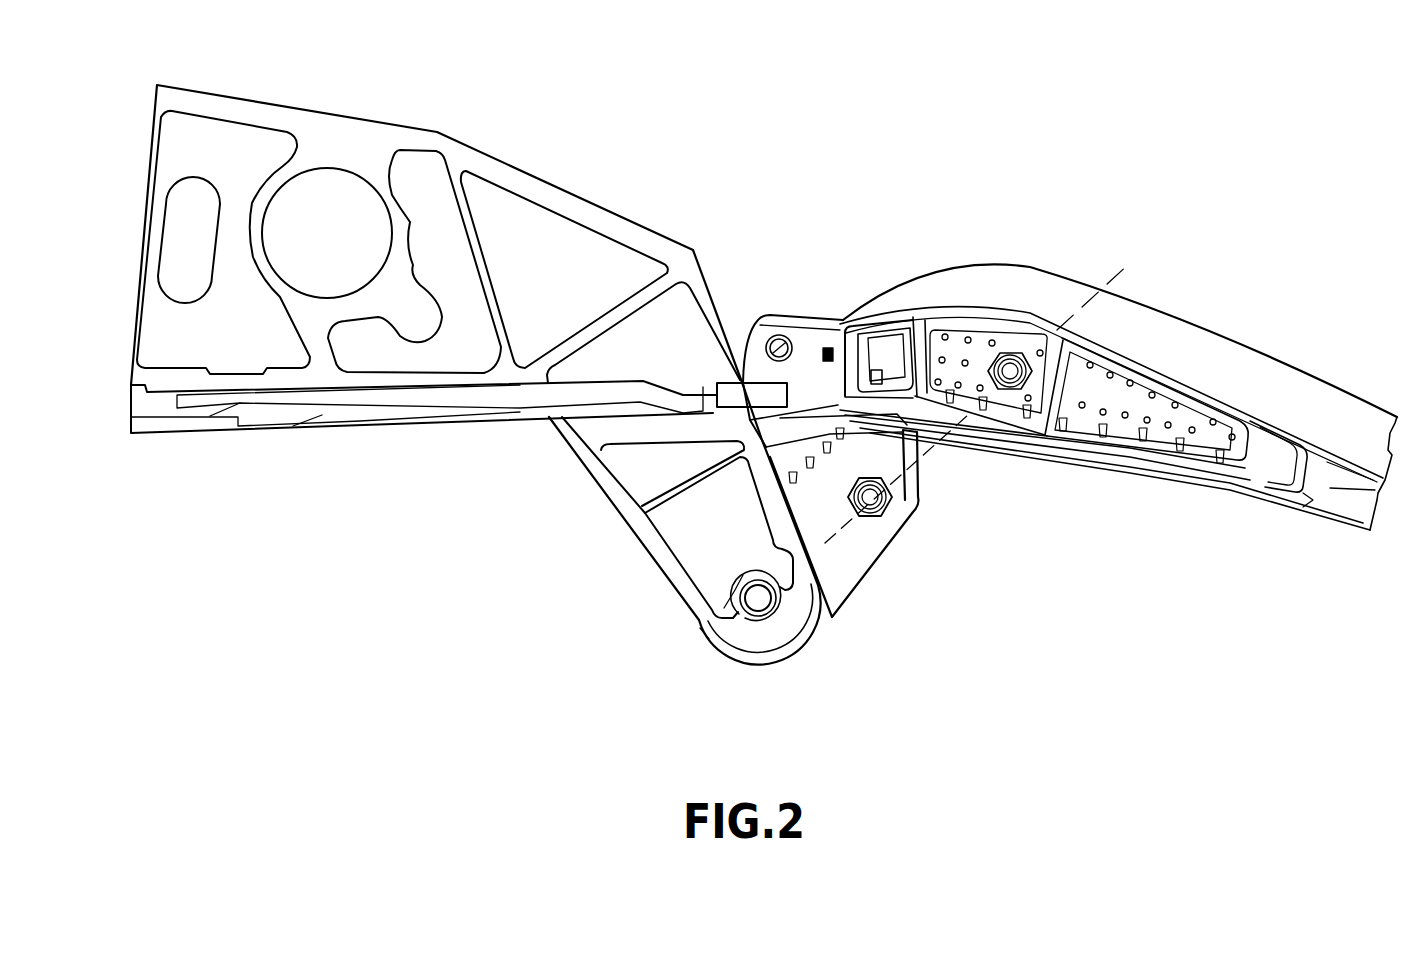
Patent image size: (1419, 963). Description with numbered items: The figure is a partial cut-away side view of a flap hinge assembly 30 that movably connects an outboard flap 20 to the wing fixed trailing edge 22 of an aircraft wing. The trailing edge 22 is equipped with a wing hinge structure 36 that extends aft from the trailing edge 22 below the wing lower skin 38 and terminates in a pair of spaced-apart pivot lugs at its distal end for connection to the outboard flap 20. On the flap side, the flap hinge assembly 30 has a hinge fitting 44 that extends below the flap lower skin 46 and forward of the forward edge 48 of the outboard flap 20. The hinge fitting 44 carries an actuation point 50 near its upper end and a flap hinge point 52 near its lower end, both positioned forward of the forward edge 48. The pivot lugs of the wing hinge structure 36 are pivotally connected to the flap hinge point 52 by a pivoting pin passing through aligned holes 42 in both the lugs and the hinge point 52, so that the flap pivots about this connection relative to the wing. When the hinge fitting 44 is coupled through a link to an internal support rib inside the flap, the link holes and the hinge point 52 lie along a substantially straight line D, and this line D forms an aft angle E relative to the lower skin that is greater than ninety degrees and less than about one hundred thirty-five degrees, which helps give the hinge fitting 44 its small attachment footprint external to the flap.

The outboard flap 20 is at (1192, 301).
The wing fixed trailing edge 22 is at (620, 214).
The flap hinge assembly 30 is at (948, 519).
The wing hinge structure 36 is at (626, 500).
The wing lower skin 38 is at (393, 427).
The aligned holes 42 is at (758, 610).
The hinge fitting 44 is at (848, 553).
The flap lower skin 46 is at (1150, 470).
The forward edge 48 is at (880, 303).
The actuation point 50 is at (777, 338).
The flap hinge point 52 is at (777, 606).
The straight line D is at (1127, 264).
The aft angle E is at (954, 483).